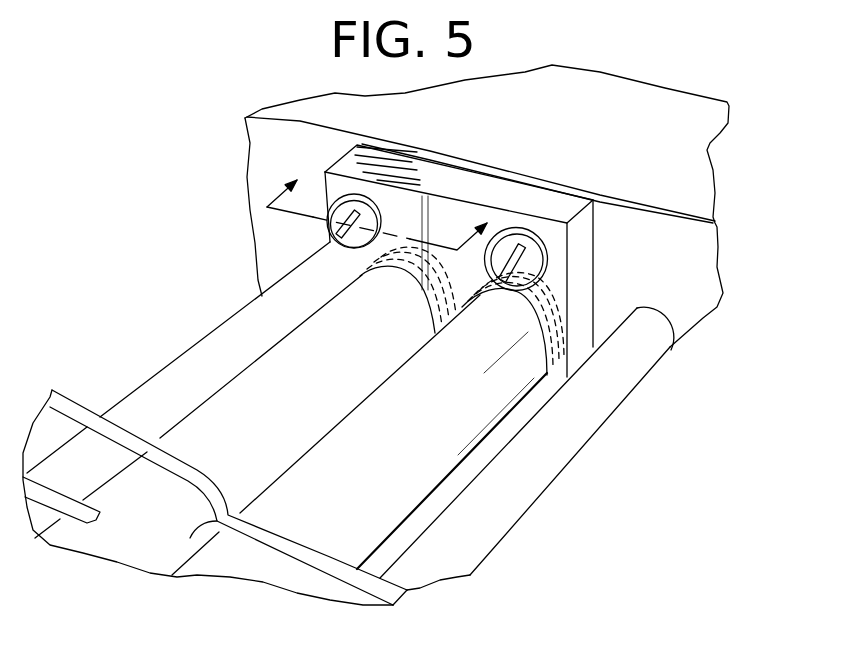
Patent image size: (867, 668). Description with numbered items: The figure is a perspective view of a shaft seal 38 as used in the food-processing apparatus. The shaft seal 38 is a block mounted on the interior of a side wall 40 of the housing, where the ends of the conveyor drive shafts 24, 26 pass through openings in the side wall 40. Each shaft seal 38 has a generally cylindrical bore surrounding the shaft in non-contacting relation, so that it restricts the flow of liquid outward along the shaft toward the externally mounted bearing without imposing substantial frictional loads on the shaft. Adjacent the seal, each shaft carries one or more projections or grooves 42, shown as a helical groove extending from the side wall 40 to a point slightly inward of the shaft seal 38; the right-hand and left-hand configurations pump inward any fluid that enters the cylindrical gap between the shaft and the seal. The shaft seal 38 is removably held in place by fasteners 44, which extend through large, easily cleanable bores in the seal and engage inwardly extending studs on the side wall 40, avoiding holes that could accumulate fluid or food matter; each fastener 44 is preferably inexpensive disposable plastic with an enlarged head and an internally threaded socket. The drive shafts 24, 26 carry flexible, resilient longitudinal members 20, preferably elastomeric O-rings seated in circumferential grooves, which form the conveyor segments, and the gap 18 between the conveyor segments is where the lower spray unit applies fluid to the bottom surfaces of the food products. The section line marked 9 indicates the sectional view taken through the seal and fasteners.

The section line 9- 9 is at (372, 221).
The gap 18 is at (355, 385).
The longitudinal member 20 is at (70, 397).
The conveyor drive shaft 24 is at (282, 436).
The conveyor drive shaft 26 is at (357, 488).
The shaft seal 38 is at (583, 261).
The side wall 40 is at (712, 301).
The groove 42 is at (525, 333).
The fastener 44 is at (373, 202).